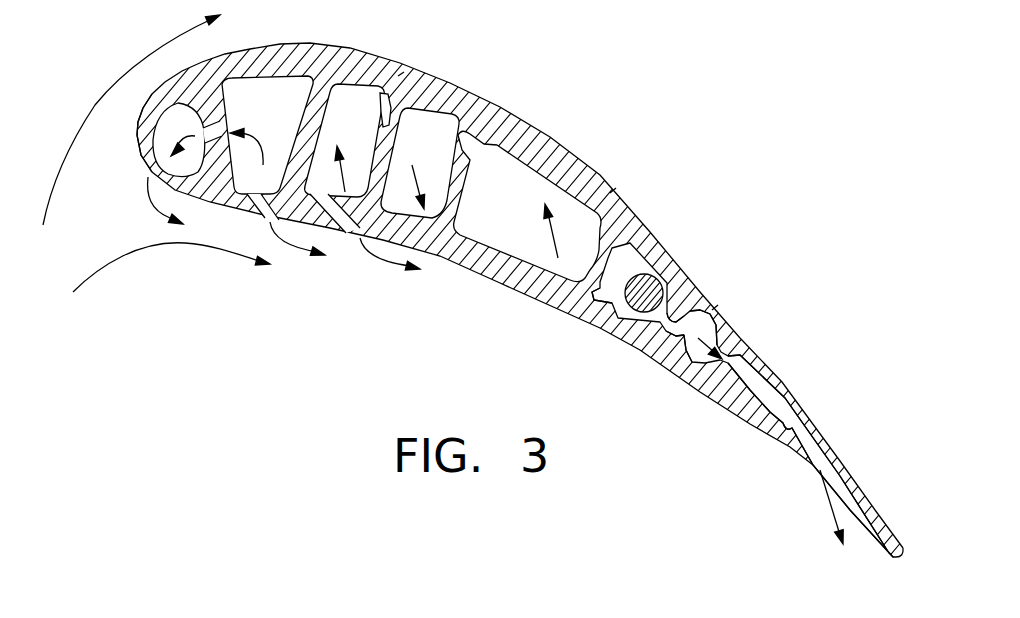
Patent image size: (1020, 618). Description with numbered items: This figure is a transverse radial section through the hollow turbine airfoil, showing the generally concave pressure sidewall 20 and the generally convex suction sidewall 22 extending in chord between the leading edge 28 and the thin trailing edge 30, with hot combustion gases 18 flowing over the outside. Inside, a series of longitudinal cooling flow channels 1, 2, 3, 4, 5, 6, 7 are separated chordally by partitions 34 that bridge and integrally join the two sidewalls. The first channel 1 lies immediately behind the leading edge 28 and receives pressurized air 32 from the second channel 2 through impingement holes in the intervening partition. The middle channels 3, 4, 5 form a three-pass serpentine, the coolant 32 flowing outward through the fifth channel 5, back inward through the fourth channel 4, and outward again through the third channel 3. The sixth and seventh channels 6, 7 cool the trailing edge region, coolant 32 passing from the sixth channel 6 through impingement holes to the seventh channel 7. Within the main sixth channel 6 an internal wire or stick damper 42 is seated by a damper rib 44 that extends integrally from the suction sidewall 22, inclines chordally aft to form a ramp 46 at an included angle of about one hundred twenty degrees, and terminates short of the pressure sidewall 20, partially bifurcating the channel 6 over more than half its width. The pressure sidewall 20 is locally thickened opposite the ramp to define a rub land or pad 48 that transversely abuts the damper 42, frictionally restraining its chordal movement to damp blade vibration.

The hot combustion gases 18 is at (140, 57).
The pressure sidewall 20 is at (506, 288).
The suction sidewall 22 is at (540, 140).
The leading edge 28 is at (137, 150).
The trailing edge 30 is at (897, 558).
The pressurized air 32 is at (548, 246).
The longitudinal partitions 34 is at (400, 75).
The wire or stick damper 42 is at (664, 250).
The damper rib 44 is at (688, 367).
The ramp 46 is at (652, 342).
The damper rub land or pad 48 is at (580, 312).
The first channel 1 is at (192, 126).
The second channel 2 is at (270, 104).
The third channel 3 is at (357, 114).
The fourth channel 4 is at (432, 139).
The fifth channel 5 is at (527, 206).
The sixth channel 6 is at (706, 396).
The seventh channel 7 is at (748, 387).